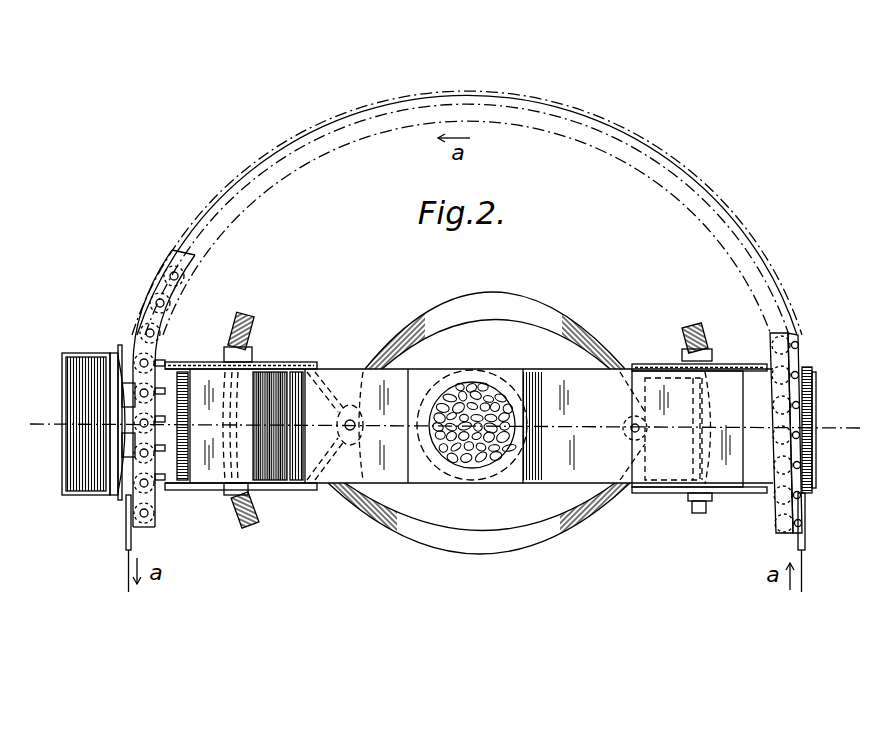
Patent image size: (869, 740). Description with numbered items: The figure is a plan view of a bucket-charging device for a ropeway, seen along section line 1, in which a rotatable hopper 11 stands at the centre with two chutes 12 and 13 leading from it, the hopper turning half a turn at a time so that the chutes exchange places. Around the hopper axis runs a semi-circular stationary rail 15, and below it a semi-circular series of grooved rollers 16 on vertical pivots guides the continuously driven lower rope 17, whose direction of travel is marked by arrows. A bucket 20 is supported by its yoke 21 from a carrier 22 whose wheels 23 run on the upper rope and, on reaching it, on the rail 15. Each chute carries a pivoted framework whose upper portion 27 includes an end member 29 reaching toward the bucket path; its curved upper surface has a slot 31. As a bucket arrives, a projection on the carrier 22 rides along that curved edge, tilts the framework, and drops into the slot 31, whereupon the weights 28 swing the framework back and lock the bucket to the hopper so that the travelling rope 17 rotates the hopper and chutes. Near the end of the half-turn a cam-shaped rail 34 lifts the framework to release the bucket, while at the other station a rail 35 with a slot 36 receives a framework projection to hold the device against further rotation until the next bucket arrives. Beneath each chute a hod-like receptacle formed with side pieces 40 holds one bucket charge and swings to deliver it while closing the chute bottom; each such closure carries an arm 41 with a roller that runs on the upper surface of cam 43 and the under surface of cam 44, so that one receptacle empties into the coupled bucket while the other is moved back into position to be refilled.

The section line 1- 1 is at (42, 405).
The hopper 11 is at (503, 379).
The chute 12 is at (330, 475).
The chute 13 is at (668, 462).
The stationary rail 15 is at (797, 349).
The rollers 16 is at (784, 337).
The driving rope 17 is at (127, 560).
The bucket 20 is at (80, 352).
The yoke 21 is at (116, 350).
The carrier 22 is at (128, 442).
The wheels 23 is at (128, 393).
The upper portion of framework 27 is at (184, 362).
The weights 28 is at (250, 351).
The end member 29 is at (812, 456).
The slot 31 is at (814, 426).
The cam-shaped rail 34 is at (246, 330).
The rail 35 is at (690, 333).
The slot 36 is at (722, 494).
The side pieces 40 is at (170, 352).
The arm 41 is at (292, 367).
The cam 43 is at (468, 301).
The cam 44 is at (556, 522).